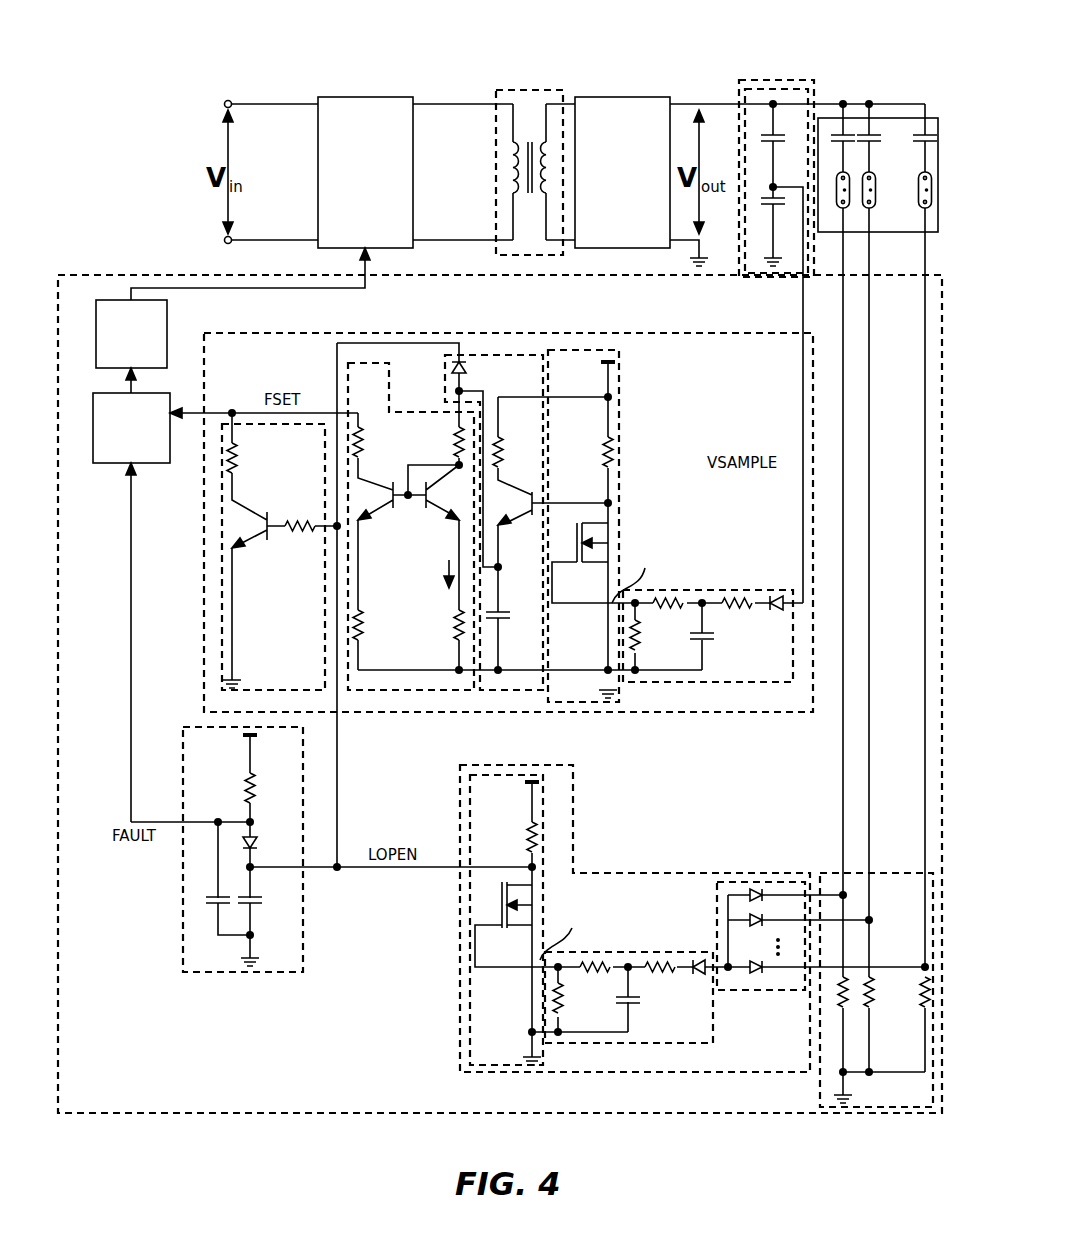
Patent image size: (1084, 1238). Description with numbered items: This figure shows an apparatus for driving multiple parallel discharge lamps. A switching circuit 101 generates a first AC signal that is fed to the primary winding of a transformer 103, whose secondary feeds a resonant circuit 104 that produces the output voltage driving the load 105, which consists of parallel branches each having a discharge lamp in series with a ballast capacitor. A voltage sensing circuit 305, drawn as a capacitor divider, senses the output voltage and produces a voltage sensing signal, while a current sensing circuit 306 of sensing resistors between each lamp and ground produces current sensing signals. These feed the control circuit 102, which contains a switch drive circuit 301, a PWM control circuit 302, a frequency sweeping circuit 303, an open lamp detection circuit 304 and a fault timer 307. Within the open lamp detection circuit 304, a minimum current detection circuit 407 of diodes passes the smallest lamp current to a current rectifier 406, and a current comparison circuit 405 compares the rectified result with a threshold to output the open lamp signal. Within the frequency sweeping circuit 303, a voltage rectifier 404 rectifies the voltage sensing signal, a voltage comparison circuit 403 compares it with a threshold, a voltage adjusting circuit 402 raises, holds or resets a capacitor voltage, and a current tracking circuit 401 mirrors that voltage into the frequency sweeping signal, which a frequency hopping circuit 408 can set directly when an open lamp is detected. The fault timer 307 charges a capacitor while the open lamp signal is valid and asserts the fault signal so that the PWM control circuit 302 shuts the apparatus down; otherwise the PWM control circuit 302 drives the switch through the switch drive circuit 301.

The switching circuit 101 is at (368, 97).
The transformer 103 is at (530, 90).
The resonant circuit 104 is at (622, 97).
The load 105 is at (905, 118).
The voltage sensing circuit 305 is at (775, 278).
The control circuit 102 is at (150, 1115).
The switch drive circuit 301 is at (168, 313).
The PWM control circuit 302 is at (93, 450).
The frequency sweeping circuit 303 is at (370, 712).
The frequency hopping circuit 408 is at (314, 598).
The current tracking circuit 401 is at (427, 690).
The voltage adjusting circuit 402 is at (513, 690).
The voltage comparison circuit 403 is at (617, 448).
The voltage rectifier 404 is at (713, 590).
The fault timer 307 is at (282, 972).
The open lamp detection circuit 304 is at (460, 940).
The current comparison circuit 405 is at (470, 985).
The current rectifier 406 is at (635, 952).
The minimum current detection circuit 407 is at (797, 990).
The current sensing circuit 306 is at (818, 1097).